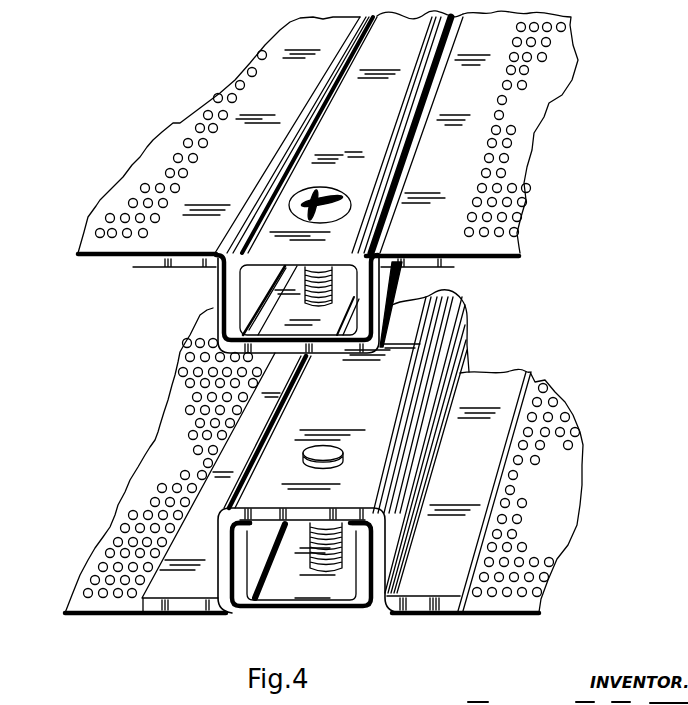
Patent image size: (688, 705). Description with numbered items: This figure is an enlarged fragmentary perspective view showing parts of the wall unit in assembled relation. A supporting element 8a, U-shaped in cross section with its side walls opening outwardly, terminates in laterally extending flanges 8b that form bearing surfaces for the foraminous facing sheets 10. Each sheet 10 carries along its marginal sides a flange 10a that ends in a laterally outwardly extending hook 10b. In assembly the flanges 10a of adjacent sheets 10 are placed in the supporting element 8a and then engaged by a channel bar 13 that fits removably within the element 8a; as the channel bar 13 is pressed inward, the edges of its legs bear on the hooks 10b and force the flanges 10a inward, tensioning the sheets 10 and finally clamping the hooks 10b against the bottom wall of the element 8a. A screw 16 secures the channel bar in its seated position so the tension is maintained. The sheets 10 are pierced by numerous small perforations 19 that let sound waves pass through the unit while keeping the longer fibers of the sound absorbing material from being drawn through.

The supporting element 8a is at (465, 305).
The laterally extending flange 8b is at (447, 612).
The foraminous facing sheet 10 is at (147, 160).
The flange 10a is at (390, 580).
The hook 10b is at (350, 509).
The channel bar 13 is at (376, 33).
The screw 16 is at (348, 199).
The perforation 19 is at (219, 96).